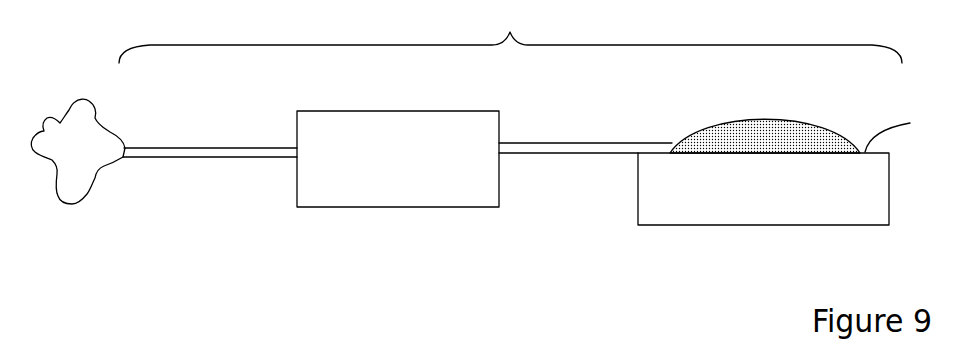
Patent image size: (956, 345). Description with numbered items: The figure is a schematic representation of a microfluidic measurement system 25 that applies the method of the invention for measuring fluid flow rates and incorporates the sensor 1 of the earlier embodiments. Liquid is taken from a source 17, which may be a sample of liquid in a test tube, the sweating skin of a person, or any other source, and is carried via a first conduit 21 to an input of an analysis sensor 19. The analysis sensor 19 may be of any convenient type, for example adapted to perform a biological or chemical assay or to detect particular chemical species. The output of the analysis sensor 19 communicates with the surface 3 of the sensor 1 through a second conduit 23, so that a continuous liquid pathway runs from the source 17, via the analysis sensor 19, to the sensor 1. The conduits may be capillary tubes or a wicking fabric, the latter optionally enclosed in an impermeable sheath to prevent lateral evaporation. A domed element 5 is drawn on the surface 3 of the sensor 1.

The microfluidic measurement system 25 is at (510, 36).
The source 17 is at (78, 187).
The first conduit 21 is at (167, 158).
The analysis sensor 19 is at (407, 207).
The second conduit 23 is at (537, 153).
The sensor 1 is at (787, 215).
The glass layer 5 is at (800, 128).
The surface 3 is at (896, 131).